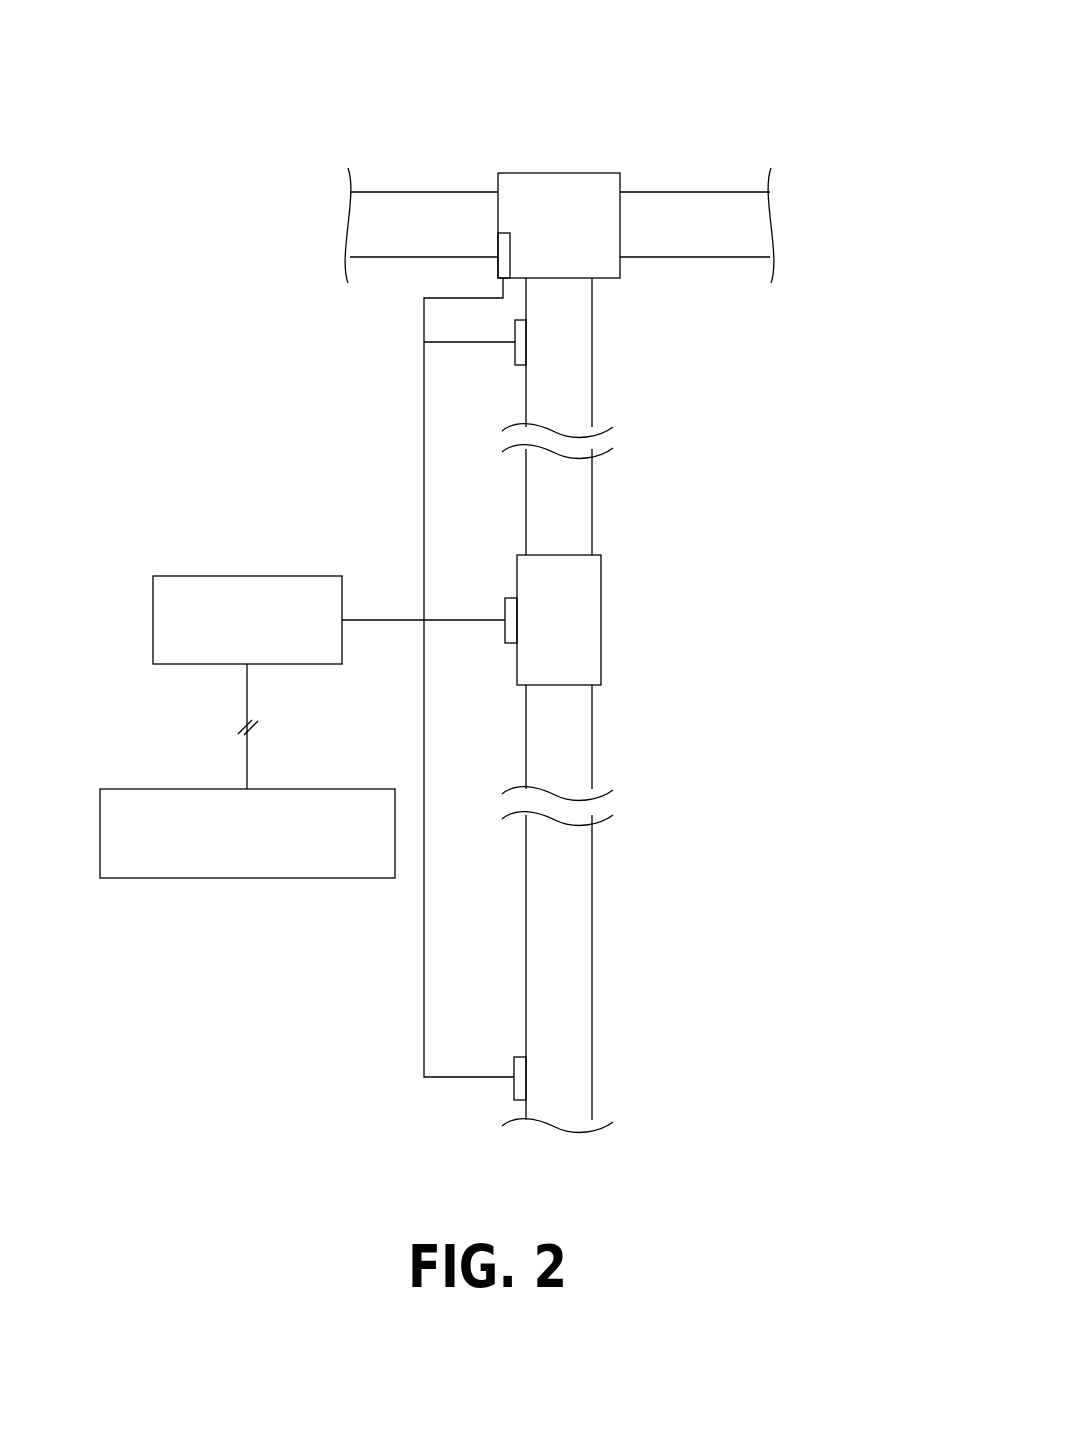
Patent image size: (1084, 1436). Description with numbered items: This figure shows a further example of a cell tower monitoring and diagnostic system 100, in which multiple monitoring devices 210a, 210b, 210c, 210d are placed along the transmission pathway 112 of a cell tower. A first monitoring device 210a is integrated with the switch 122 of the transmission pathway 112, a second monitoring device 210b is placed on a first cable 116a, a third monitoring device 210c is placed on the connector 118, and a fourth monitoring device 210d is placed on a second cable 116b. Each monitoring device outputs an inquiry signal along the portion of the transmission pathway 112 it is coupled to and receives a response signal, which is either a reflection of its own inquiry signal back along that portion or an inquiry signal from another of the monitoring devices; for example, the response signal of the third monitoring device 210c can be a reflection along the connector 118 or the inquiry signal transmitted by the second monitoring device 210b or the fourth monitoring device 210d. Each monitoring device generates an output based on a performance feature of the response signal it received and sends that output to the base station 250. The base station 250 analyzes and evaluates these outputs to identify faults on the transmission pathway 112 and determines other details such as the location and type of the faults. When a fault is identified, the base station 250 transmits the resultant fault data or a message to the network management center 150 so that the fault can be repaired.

The distributed antenna system 100 is at (859, 93).
The transmission pathway 112 is at (305, 198).
The switch 122 is at (560, 173).
The first monitoring device 210a is at (544, 255).
The second monitoring device 210b is at (520, 366).
The third monitoring device 210c is at (512, 644).
The fourth monitoring device 210d is at (516, 1057).
The first cable 116a is at (592, 349).
The second cable 116b is at (592, 931).
The connector 118 is at (601, 618).
The base station 250 is at (248, 576).
The network management center 150 is at (135, 789).